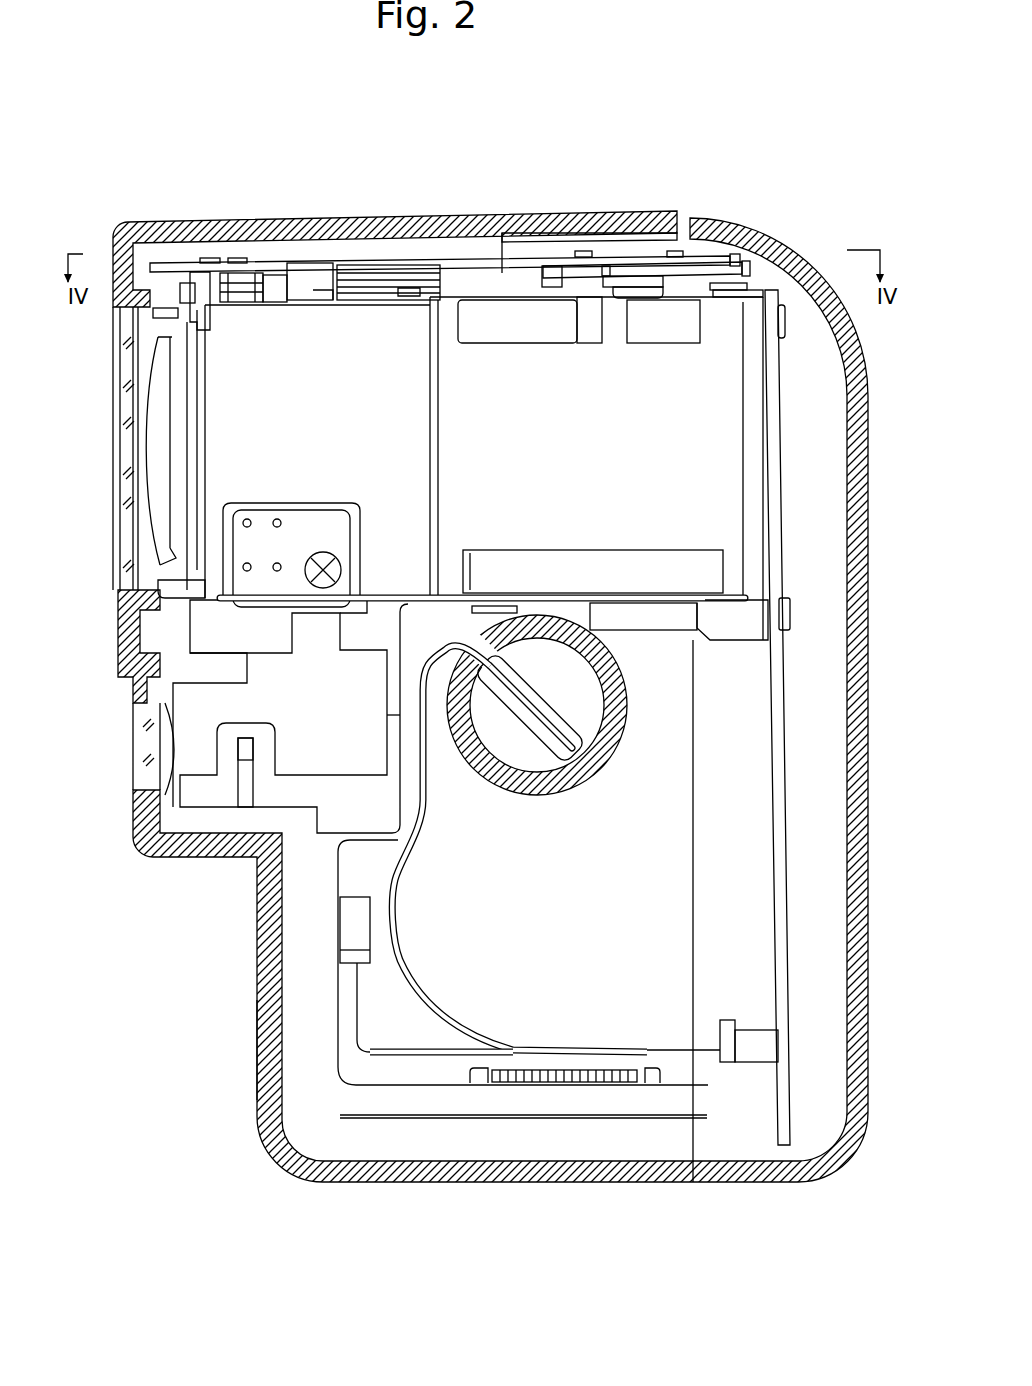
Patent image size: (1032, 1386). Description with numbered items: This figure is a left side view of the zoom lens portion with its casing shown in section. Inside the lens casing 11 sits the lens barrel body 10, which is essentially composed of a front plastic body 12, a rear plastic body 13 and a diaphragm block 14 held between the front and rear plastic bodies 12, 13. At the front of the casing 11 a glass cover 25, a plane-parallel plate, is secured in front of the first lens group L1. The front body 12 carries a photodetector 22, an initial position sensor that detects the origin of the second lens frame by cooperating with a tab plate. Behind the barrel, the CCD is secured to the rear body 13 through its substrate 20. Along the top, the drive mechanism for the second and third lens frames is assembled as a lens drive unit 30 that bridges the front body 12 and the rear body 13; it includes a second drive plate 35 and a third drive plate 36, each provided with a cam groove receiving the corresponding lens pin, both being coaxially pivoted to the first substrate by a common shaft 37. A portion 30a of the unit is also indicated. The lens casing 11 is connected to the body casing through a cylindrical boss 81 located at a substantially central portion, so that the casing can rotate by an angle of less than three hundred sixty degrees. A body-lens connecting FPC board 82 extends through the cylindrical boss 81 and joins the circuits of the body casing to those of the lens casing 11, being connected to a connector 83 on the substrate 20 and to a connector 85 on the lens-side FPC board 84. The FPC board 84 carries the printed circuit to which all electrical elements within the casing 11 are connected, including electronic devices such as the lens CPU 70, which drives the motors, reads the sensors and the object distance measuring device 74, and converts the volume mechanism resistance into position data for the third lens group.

The lens barrel body 10 is at (762, 280).
The lens casing 11 is at (267, 1038).
The front plastic body 12 is at (395, 410).
The rear plastic body 13 is at (735, 472).
The diaphragm block 14 is at (440, 455).
The substrate 20 is at (783, 815).
The photodetector 22 is at (258, 505).
The glass cover 25 is at (127, 563).
The lens drive unit 30 is at (648, 250).
The cover portion 30a is at (456, 262).
The second drive plate 35 is at (356, 268).
The third drive plate 36 is at (507, 275).
The common shaft 37 is at (410, 297).
The lens controller 70 is at (603, 1060).
The object distance measuring device 74 is at (197, 760).
The cylindrical boss 81 is at (590, 777).
The body-lens connecting FPC board 82 is at (363, 1023).
The connector 83 is at (755, 1047).
The FPC board on the lens side 84 is at (322, 520).
The connector 85 is at (345, 925).
The first lens group L1 is at (163, 503).